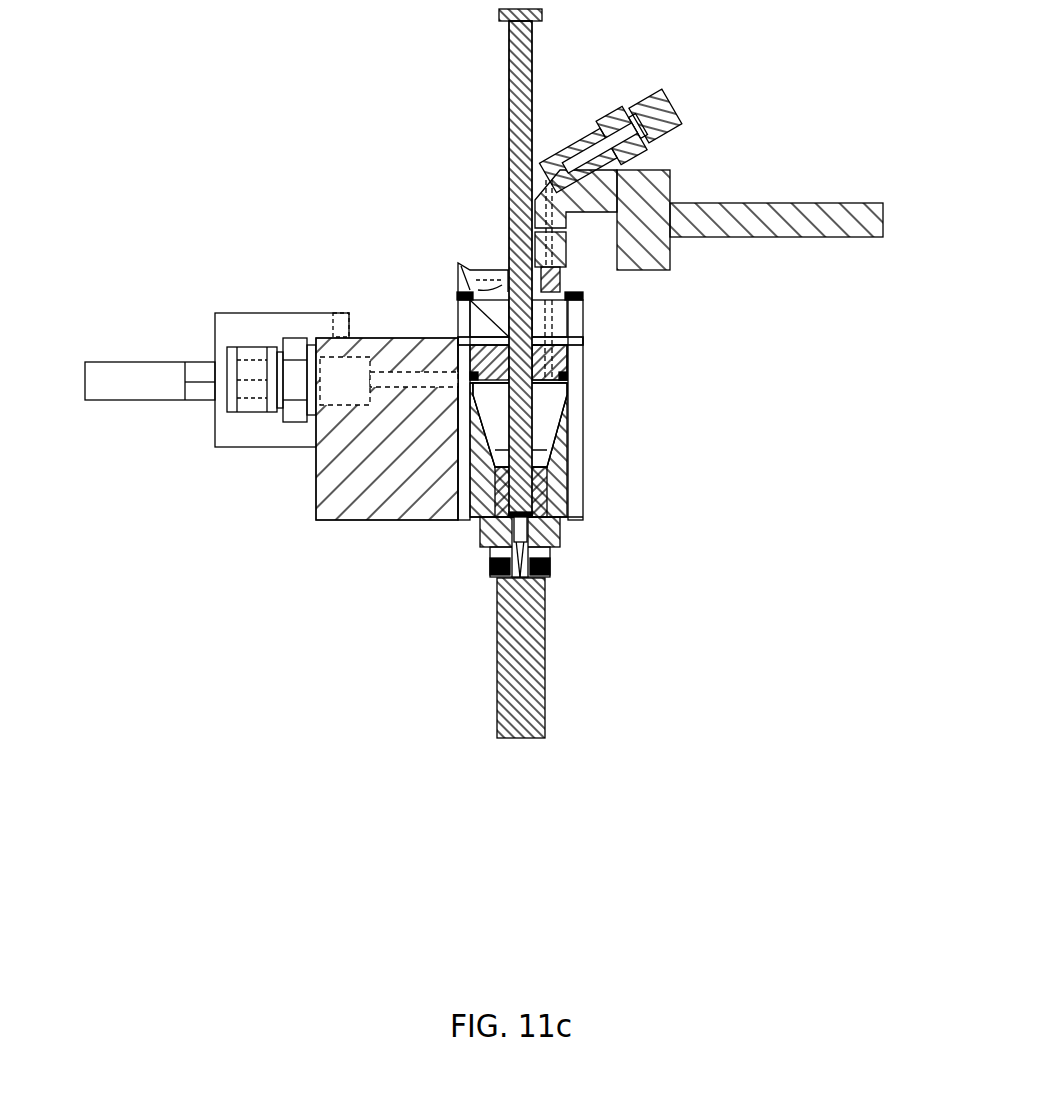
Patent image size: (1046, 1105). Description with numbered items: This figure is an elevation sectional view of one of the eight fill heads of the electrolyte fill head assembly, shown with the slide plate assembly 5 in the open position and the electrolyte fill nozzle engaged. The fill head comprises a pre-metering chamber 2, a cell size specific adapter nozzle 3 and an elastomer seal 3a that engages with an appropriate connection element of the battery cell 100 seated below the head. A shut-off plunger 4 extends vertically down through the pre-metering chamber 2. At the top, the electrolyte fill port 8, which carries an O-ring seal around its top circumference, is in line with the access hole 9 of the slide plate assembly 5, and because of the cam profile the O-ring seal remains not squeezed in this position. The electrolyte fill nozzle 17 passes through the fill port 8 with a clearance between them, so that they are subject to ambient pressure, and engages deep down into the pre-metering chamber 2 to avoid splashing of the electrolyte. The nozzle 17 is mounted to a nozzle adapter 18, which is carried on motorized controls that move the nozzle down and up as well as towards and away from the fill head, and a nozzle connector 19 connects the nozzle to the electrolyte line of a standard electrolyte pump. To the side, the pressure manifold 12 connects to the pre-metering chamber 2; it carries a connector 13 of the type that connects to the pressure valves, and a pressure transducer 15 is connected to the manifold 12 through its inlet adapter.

The pre-metering chamber 2 is at (545, 416).
The cell size specific adapter nozzle 3 is at (498, 568).
The elastomer seal 3a is at (548, 568).
The shut-off plunger 4 is at (510, 210).
The slider plate valve 5 is at (458, 262).
The electrolyte fill port 8 is at (560, 345).
The access hole 9 is at (560, 310).
The pressure manifold 12 is at (375, 450).
The connector 13 is at (248, 405).
The pressure transducer 15 is at (137, 383).
The electrolyte fill nozzle 17 is at (565, 370).
The nozzle adapter 18 is at (730, 222).
The nozzle connector 19 is at (643, 100).
The battery cell 100 is at (472, 680).